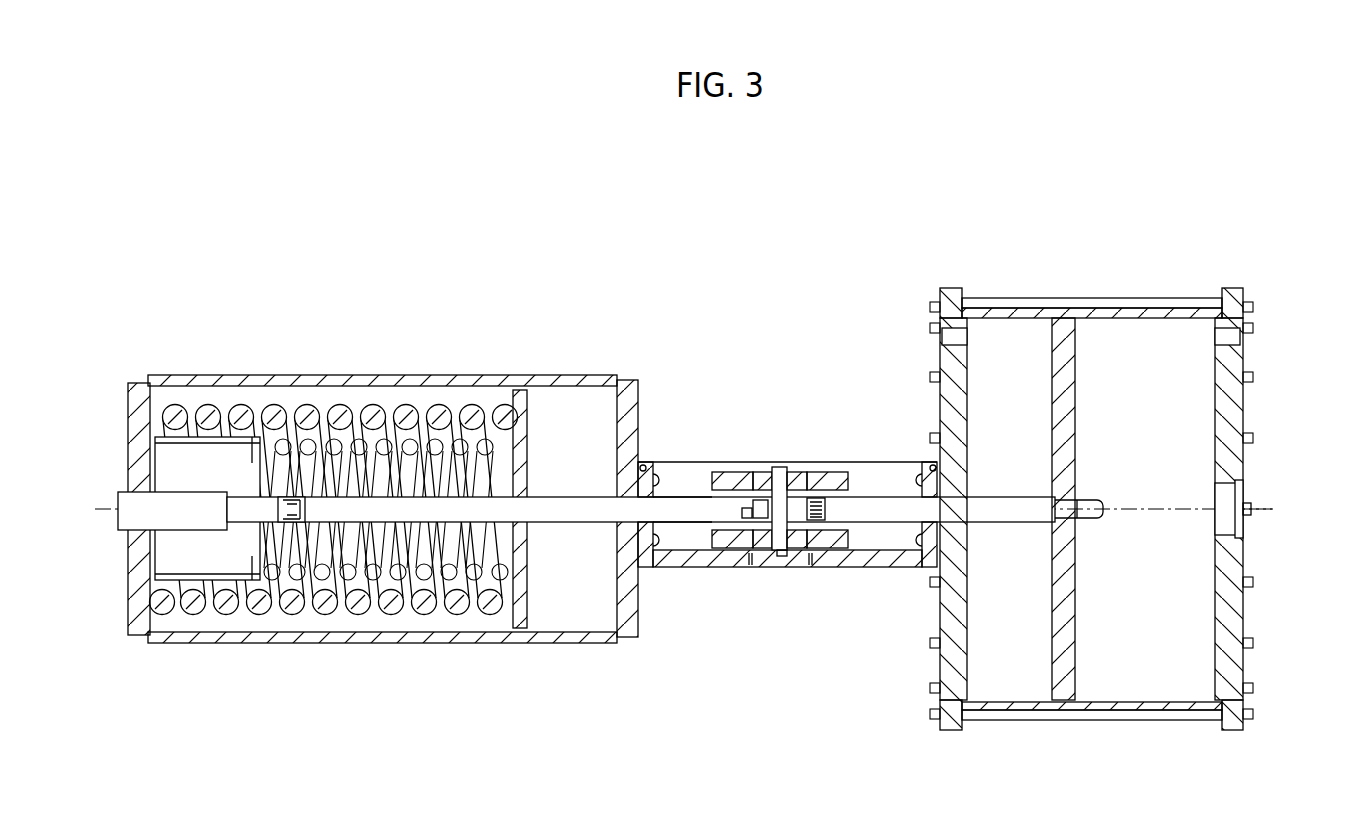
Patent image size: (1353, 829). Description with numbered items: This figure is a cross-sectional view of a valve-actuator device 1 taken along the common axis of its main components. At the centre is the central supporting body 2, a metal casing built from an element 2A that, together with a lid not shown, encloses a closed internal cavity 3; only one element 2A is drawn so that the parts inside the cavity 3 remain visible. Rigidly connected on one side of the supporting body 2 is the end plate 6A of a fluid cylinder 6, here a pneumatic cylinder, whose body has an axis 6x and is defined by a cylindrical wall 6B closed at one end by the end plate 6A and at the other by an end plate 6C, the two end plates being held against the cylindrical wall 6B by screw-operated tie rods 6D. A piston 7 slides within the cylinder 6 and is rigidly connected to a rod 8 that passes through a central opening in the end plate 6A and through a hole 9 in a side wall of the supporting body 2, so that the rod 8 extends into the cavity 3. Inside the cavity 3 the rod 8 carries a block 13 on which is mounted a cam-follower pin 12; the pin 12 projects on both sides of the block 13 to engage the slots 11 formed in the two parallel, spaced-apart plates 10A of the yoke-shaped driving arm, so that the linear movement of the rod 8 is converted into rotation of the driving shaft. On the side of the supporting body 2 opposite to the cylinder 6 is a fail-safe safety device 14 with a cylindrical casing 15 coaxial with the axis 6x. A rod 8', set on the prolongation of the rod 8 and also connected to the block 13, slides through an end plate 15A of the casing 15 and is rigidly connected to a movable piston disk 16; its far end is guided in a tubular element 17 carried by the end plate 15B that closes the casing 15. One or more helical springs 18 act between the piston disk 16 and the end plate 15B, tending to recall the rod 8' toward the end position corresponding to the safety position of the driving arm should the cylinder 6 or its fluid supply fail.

The valve-actuator device 1 is at (800, 345).
The central supporting body 2 is at (835, 570).
The element 2A is at (683, 558).
The internal cavity 3 is at (698, 470).
The fluid cylinder 6 is at (1108, 298).
The end plate 6A is at (945, 305).
The cylindrical wall 6B is at (1147, 700).
The end plate 6C is at (1232, 407).
The screw-operated tie rods 6D is at (1020, 303).
The axis 6x is at (1265, 508).
The piston 7 is at (1063, 385).
The rod 8 is at (610, 494).
The rod 8' is at (437, 486).
The hole 9 is at (935, 462).
The plates 10A is at (732, 537).
The slot 11 is at (758, 472).
The cam-follower pin 12 is at (783, 468).
The block 13 is at (760, 523).
The fail-safe safety device 14 is at (350, 377).
The cylindrical casing 15 is at (222, 382).
The end plate 15A is at (634, 392).
The end plate 15B is at (137, 427).
The piston disk 16 is at (522, 436).
The tubular element 17 is at (180, 530).
The helical springs 18 is at (465, 408).